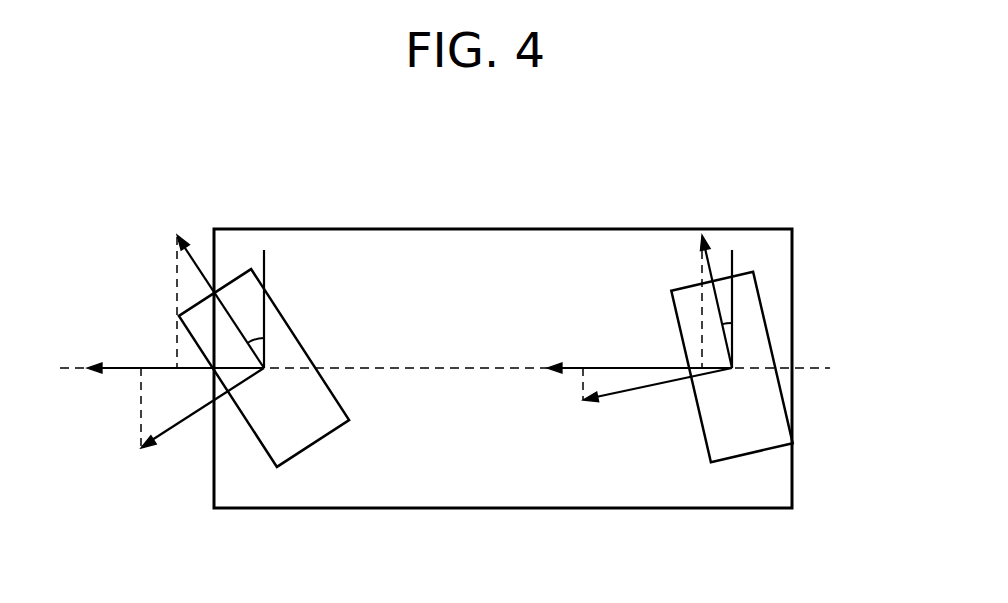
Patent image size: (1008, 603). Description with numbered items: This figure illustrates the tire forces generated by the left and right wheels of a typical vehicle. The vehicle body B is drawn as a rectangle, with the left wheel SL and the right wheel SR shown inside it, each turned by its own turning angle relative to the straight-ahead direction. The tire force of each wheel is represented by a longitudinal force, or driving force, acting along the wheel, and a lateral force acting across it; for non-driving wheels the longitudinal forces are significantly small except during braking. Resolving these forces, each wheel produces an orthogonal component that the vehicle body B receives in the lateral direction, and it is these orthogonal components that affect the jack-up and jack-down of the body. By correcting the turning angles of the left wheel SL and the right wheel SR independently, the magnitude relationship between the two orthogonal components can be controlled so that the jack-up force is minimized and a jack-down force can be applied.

The vehicle body B is at (530, 228).
The left wheel SL is at (317, 443).
The right wheel SR is at (735, 457).